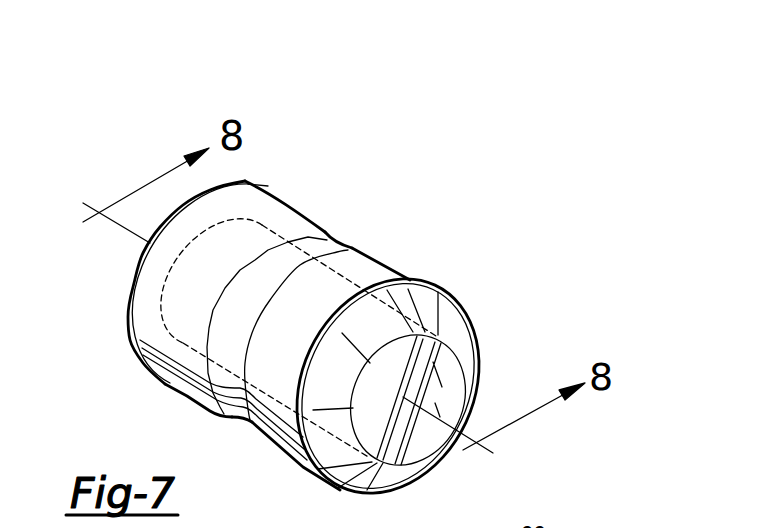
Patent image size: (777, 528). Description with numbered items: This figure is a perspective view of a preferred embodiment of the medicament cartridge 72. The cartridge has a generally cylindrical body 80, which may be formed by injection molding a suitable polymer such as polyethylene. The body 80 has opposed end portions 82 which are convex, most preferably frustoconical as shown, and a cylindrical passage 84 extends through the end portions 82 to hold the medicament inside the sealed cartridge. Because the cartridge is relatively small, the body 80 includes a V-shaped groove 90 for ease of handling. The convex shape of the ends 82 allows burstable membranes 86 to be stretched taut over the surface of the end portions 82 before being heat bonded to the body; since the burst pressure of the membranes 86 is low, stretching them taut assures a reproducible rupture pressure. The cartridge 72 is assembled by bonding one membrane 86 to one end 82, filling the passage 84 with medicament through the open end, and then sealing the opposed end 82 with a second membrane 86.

The medicament cartridge 72 is at (350, 108).
The cylindrical body 80 is at (391, 270).
The end portion 82 is at (480, 326).
The cylindrical passage 84 is at (188, 337).
The burstable membrane 86 is at (414, 452).
The V-shaped groove 90 is at (318, 248).